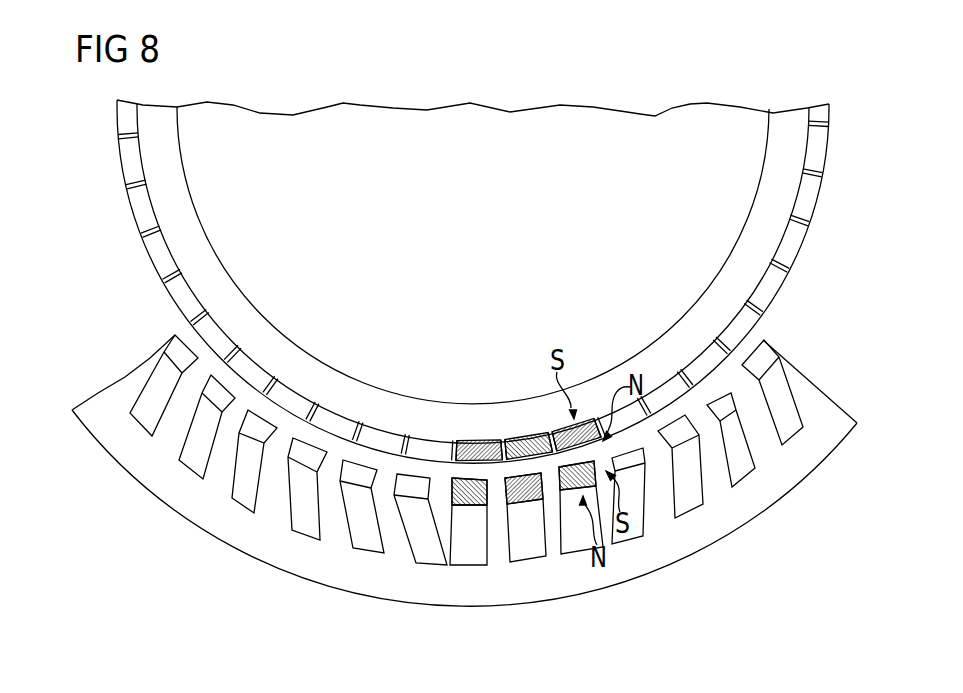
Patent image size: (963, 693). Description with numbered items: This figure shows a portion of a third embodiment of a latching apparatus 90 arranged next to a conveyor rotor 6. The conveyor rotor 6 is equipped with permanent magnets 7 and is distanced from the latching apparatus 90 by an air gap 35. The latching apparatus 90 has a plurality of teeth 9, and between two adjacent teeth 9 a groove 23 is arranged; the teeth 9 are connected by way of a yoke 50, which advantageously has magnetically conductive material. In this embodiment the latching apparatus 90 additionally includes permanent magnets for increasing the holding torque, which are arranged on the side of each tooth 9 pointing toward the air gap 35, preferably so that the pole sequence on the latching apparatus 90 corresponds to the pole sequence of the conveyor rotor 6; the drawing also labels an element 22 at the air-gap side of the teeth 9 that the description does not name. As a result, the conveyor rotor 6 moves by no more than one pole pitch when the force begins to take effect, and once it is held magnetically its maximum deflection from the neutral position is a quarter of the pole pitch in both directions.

The conveyor rotor 6 is at (792, 149).
The permanent magnets 7 is at (792, 240).
The teeth 9 is at (753, 437).
The slot wedge 22 is at (768, 352).
The groove 23 is at (788, 427).
The air gap 35 is at (538, 466).
The yoke 50 is at (736, 520).
The latching apparatus 90 is at (862, 410).